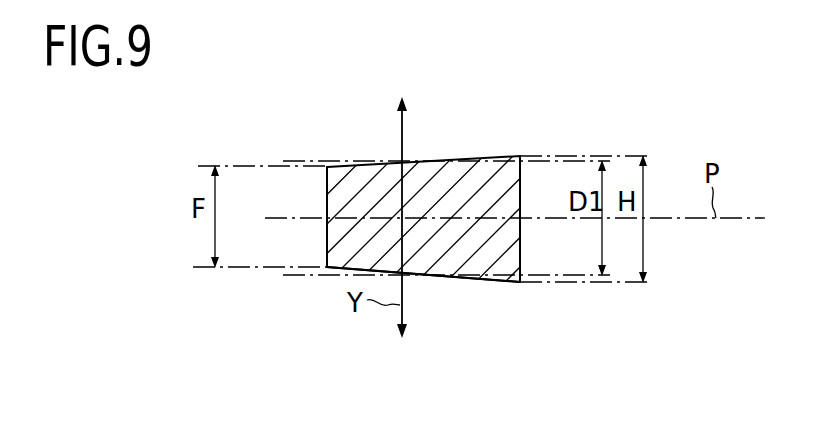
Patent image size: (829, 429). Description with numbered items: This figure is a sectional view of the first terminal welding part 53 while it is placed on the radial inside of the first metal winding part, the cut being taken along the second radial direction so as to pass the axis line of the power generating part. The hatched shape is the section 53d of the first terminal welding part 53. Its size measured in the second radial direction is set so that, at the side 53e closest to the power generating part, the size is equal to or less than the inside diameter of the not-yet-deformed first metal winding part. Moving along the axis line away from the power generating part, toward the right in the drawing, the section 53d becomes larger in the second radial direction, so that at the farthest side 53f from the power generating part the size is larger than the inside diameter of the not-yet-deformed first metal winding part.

The first terminal welding part 53 is at (470, 158).
The section 53d is at (458, 273).
The side closest to the power generating part 53e is at (326, 238).
The farthest side from the power generating part 53f is at (521, 240).